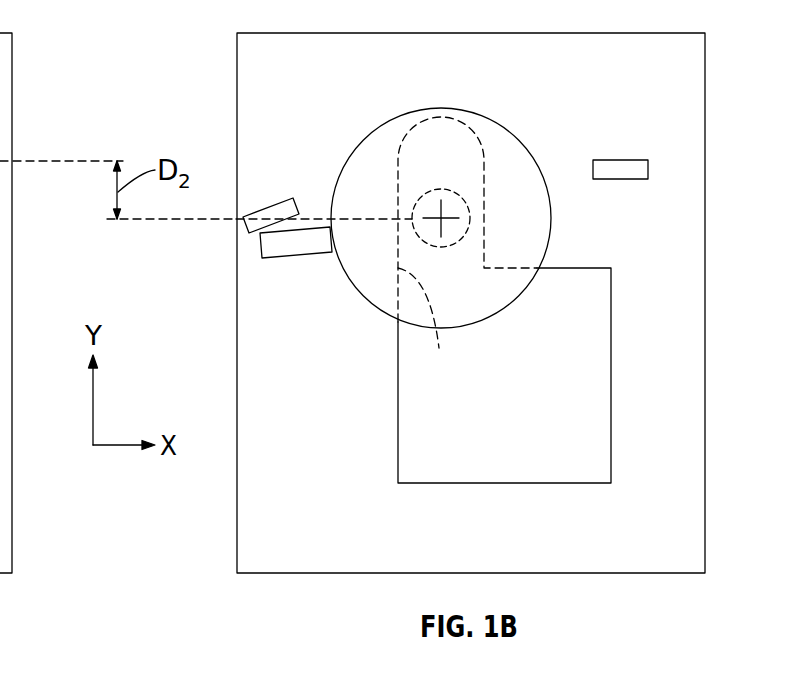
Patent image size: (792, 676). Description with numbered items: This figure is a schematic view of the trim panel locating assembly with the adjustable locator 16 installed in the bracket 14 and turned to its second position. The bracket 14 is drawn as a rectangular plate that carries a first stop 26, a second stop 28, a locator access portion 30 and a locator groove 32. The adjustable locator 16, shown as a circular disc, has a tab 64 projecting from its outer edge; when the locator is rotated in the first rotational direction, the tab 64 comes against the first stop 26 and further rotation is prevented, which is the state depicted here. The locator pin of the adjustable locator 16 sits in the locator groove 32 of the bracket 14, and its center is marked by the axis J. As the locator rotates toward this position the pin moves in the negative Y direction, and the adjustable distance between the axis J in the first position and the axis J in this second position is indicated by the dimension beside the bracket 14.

The bracket 14 is at (705, 365).
The adjustable locator 16 is at (513, 133).
The first stop 26 is at (273, 205).
The second stop 28 is at (620, 160).
The locator access portion 30 is at (530, 483).
The locator groove 32 is at (425, 326).
The tab 64 is at (292, 258).
The axis J is at (441, 218).